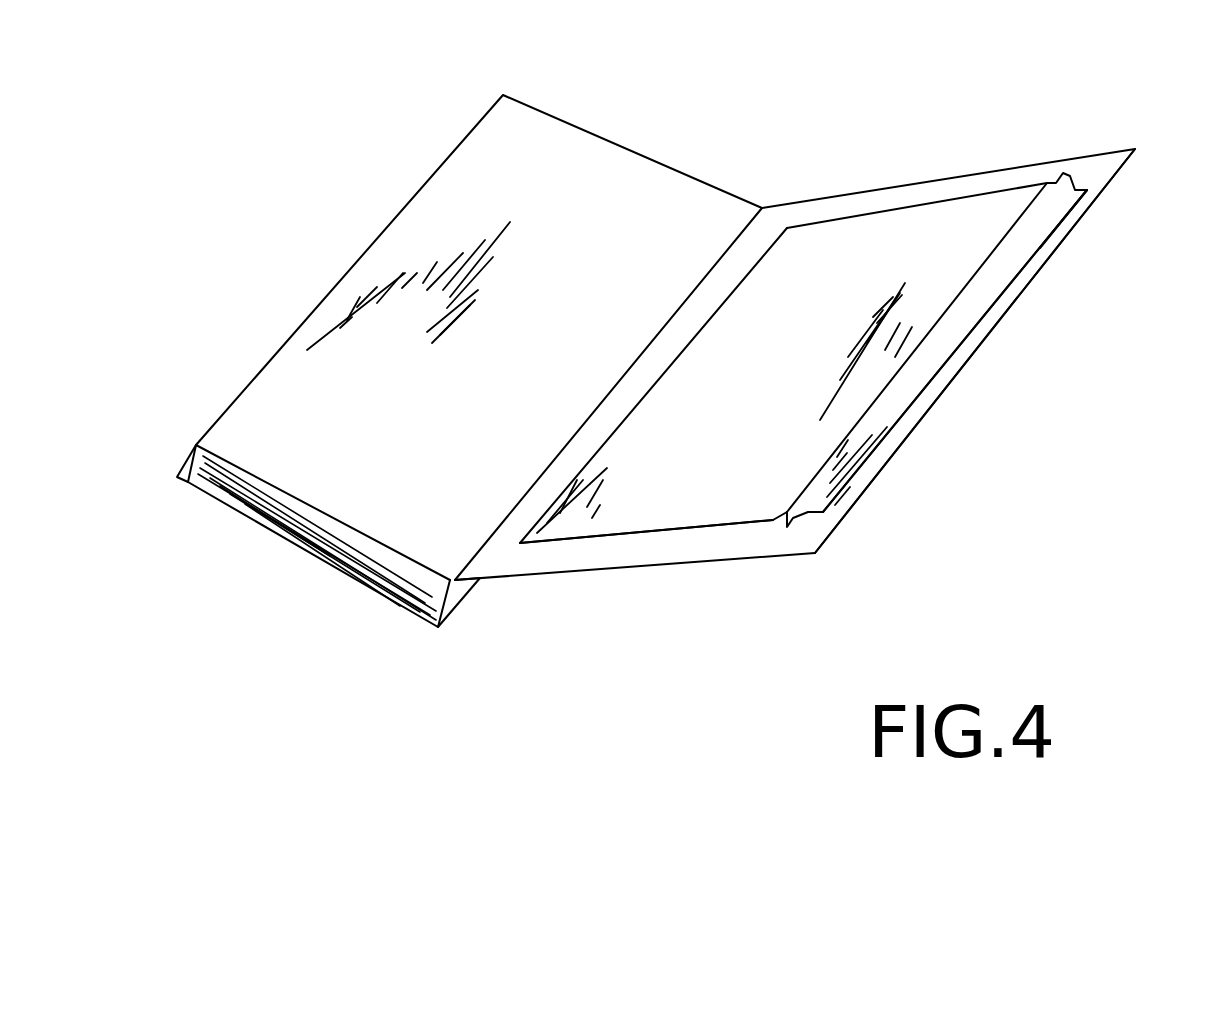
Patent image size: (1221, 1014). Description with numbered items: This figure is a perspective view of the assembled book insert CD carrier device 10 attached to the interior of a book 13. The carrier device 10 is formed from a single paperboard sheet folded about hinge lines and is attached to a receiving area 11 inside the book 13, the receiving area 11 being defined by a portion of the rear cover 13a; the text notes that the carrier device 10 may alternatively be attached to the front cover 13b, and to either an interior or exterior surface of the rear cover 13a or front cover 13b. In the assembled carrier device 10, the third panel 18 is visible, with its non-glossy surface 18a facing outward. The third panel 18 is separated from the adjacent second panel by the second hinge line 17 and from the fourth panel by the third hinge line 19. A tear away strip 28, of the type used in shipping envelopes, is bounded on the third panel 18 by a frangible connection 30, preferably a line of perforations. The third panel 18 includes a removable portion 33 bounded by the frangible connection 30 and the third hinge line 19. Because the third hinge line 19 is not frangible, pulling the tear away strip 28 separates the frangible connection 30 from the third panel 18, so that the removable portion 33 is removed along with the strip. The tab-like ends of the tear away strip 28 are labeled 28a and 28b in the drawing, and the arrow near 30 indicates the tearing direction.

The book insert CD carrier device 10 is at (825, 275).
The receiving area 11 is at (630, 545).
The book 13 is at (438, 640).
The rear cover 13a is at (693, 563).
The front cover 13b is at (178, 479).
The second hinge line 17 is at (687, 343).
The third panel 18 is at (812, 374).
The non-glossy surface of third panel 18a is at (805, 433).
The third hinge line 19 is at (927, 387).
The tear away strip 28 is at (1037, 223).
The upper tab 28a is at (982, 92).
The lower tab 28b is at (788, 530).
The frangible connection 30 is at (970, 273).
The removable portion 33 is at (958, 320).